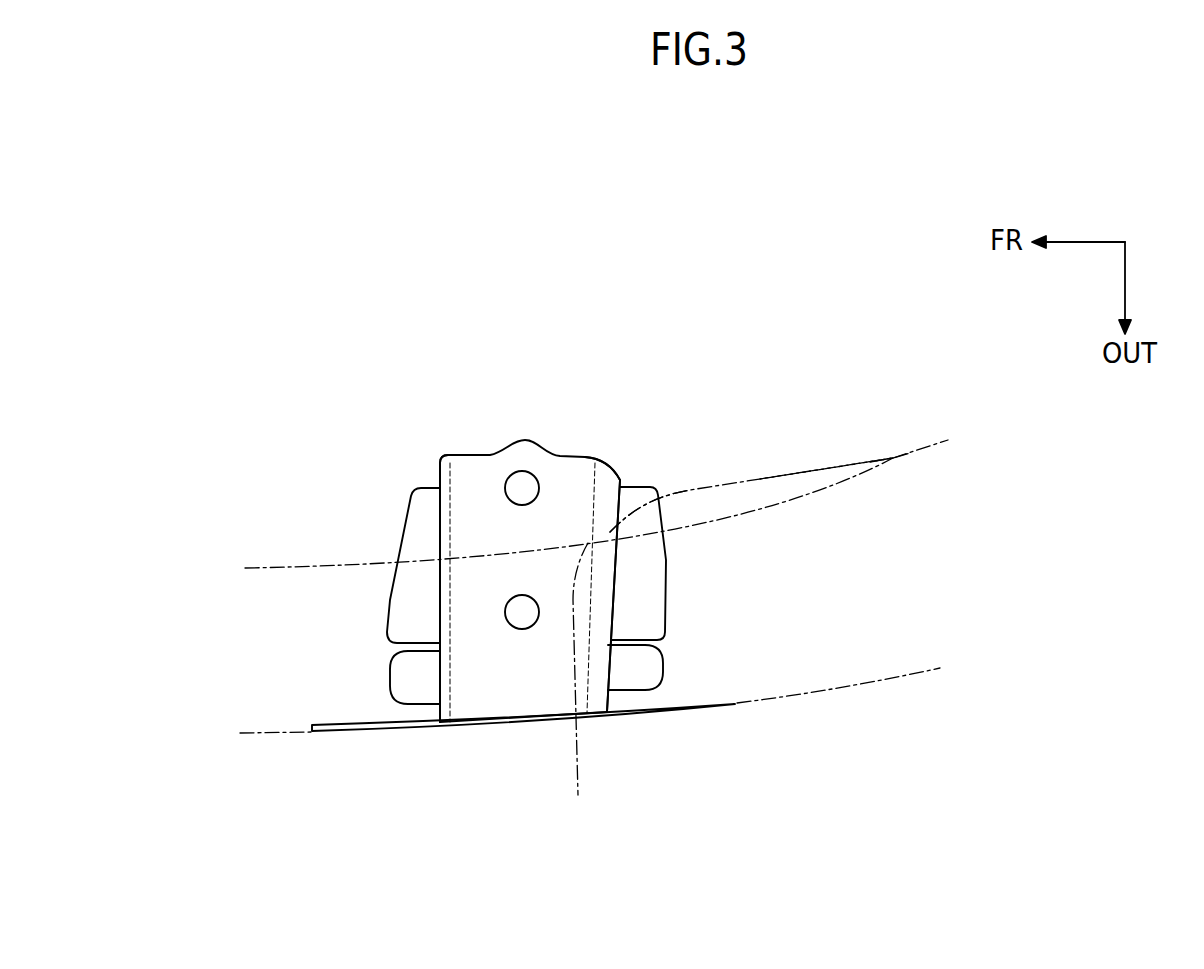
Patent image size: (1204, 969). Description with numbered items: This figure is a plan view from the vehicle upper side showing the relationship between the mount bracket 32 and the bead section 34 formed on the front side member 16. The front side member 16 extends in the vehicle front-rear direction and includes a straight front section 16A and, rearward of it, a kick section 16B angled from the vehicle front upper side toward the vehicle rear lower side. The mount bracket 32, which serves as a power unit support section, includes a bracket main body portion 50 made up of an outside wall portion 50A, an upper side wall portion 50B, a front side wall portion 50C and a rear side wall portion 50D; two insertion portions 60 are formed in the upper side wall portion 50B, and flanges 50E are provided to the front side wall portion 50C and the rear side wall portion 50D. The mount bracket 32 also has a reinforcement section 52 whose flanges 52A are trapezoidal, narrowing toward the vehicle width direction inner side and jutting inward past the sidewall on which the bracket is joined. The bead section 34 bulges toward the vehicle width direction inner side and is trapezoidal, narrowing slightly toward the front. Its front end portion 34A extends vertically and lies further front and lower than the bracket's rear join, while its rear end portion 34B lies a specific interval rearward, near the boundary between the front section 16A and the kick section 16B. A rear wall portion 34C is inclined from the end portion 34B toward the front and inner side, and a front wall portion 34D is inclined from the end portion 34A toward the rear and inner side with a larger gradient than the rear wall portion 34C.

The front side member 16 is at (929, 441).
The front section 16A is at (295, 718).
The kick section 16B is at (907, 653).
The mount bracket 32 is at (582, 320).
The bead section 34 is at (720, 489).
The end portion 34A is at (580, 688).
The end portion 34B is at (893, 458).
The rear wall portion 34C is at (782, 478).
The front wall portion 34D is at (640, 503).
The bracket main body portion 50 is at (472, 453).
The outside wall portion 50A is at (642, 712).
The upper side wall portion 50B is at (540, 695).
The front side wall portion 50C is at (440, 475).
The rear side wall portion 50D is at (622, 480).
The flanges 50E is at (397, 678).
The reinforcement section 52 is at (531, 547).
The flanges 52A is at (417, 532).
The insertion portions 60 is at (523, 472).